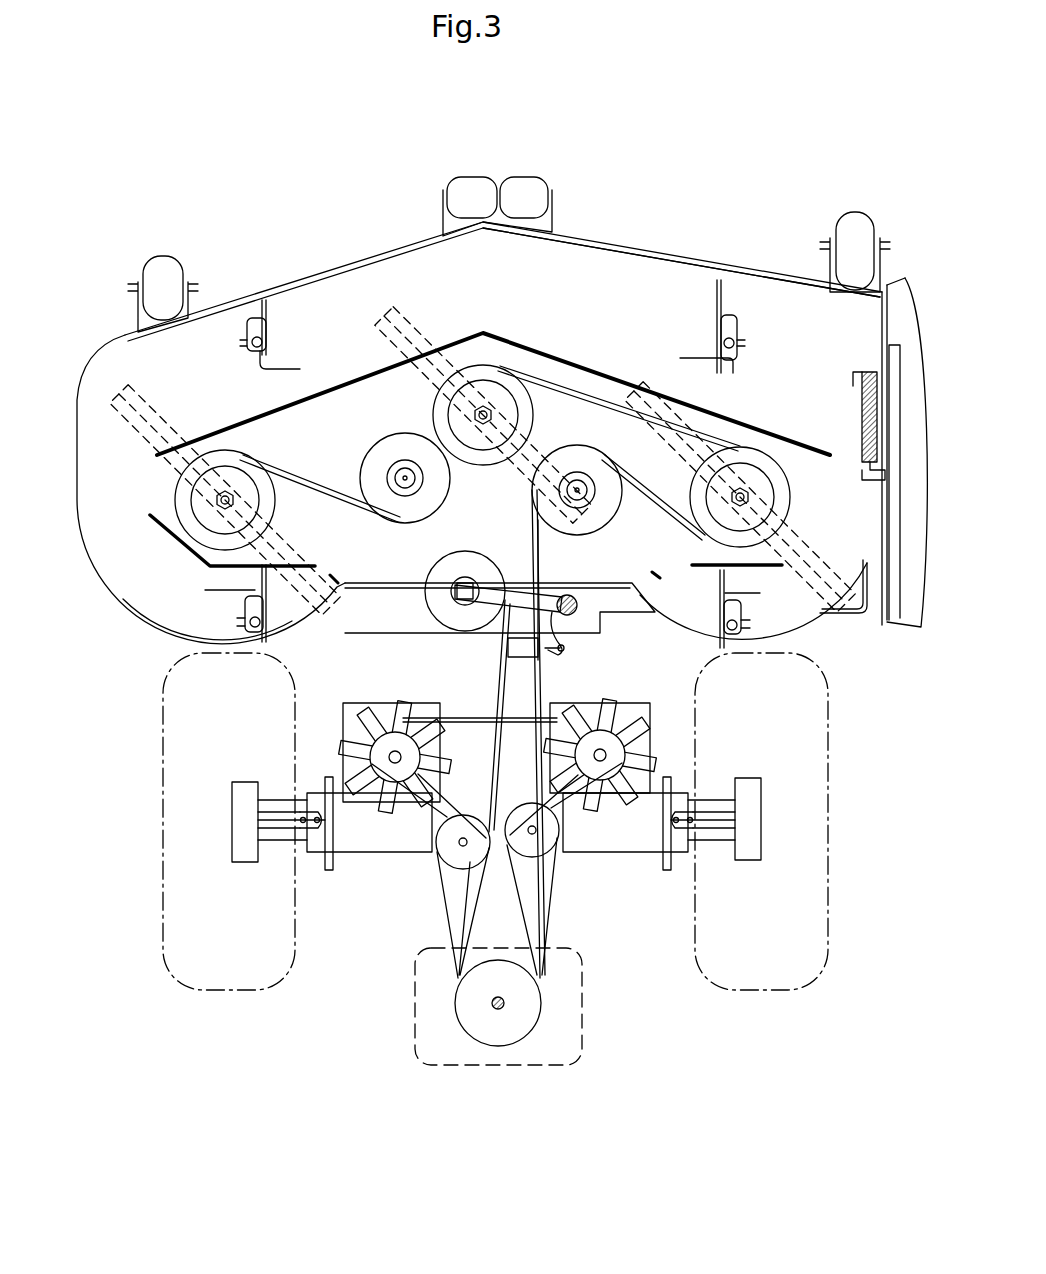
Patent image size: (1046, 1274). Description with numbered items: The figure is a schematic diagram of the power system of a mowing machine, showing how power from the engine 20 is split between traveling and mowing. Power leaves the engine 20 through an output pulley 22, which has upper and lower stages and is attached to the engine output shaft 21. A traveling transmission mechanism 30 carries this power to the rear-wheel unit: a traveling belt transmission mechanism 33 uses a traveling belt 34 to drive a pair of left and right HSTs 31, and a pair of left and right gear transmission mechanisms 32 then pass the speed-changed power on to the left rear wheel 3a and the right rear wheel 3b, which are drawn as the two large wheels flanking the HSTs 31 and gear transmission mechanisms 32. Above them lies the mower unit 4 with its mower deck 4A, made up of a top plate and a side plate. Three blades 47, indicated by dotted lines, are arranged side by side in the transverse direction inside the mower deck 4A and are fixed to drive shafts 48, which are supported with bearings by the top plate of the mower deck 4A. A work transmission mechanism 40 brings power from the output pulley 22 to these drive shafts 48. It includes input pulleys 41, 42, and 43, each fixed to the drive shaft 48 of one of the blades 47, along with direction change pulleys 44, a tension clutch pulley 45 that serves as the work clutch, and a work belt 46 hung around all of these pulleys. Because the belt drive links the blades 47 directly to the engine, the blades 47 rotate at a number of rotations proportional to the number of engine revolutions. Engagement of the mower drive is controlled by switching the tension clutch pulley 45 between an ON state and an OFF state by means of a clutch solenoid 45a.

The mower unit 4 is at (315, 265).
The mower deck 4A is at (650, 275).
The blade 47 is at (424, 312).
The input pulley 41 is at (200, 505).
The input pulley 42 is at (495, 385).
The input pulley 43 is at (755, 460).
The drive shaft 48 is at (228, 497).
The direction change pulley 44 is at (430, 497).
The work belt 46 is at (320, 478).
The tension clutch pulley 45 is at (432, 604).
The clutch solenoid 45a is at (500, 685).
The work transmission mechanism 40 is at (542, 691).
The traveling belt 34 is at (462, 715).
The HST (hydrostatic transmission) 31 is at (385, 705).
The gear transmission mechanism 32 is at (362, 862).
The traveling belt transmission mechanism 33 is at (674, 733).
The traveling transmission mechanism 30 is at (438, 812).
The left rear wheel 3a is at (162, 835).
The right rear wheel 3b is at (829, 855).
The engine 20 is at (508, 1066).
The output pulley 22 is at (522, 1010).
The engine output shaft 21 is at (490, 1003).